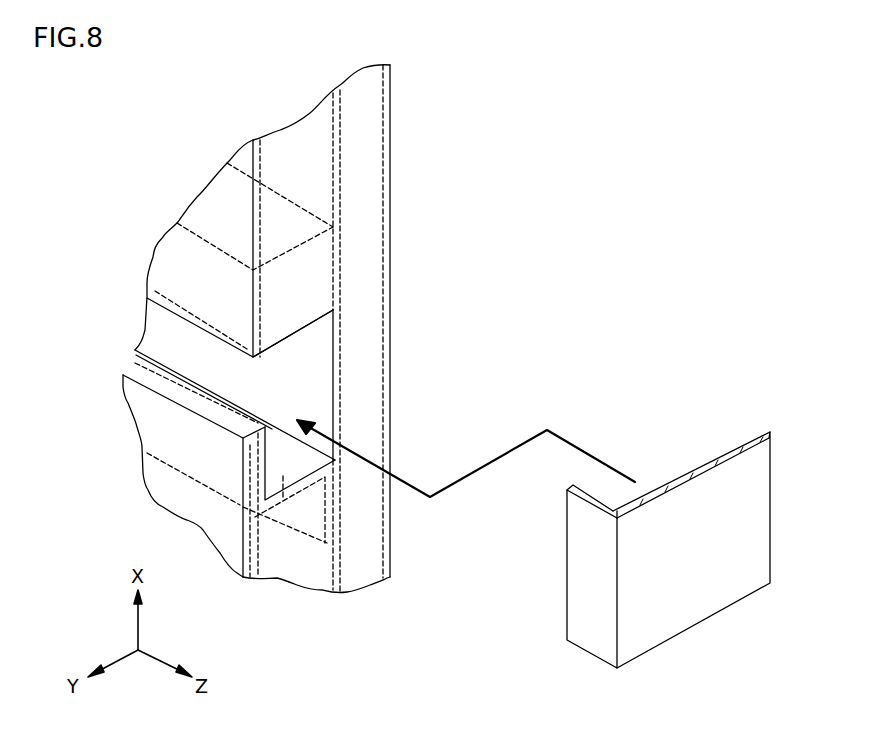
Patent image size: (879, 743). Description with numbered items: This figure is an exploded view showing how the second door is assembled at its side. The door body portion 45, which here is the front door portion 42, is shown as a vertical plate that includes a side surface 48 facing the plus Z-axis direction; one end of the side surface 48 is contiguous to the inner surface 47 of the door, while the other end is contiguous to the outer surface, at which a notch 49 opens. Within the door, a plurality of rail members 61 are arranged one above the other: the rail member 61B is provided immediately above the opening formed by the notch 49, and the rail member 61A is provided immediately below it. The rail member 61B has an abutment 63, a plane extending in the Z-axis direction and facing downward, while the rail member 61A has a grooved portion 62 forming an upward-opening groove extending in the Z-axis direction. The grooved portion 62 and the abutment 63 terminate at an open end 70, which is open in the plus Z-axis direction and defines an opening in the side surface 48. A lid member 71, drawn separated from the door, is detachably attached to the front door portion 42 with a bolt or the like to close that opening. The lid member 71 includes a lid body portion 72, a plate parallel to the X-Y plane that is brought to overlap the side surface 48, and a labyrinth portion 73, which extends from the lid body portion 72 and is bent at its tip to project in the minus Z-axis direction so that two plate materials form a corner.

The inner surface 47 is at (292, 147).
The rail member 61 is at (314, 341).
The rail member 61B is at (300, 224).
The rail member 61A is at (292, 464).
The notch 49 is at (170, 320).
The abutment 63 is at (293, 303).
The open end 70 is at (556, 526).
The door body portion 45 is at (306, 329).
The front door portion 42 is at (368, 550).
The grooved portion 62 is at (266, 474).
The side surface 48 is at (307, 560).
The lid member 71 is at (565, 517).
The lid body portion 72 is at (695, 547).
The labyrinth portion 73 is at (637, 583).